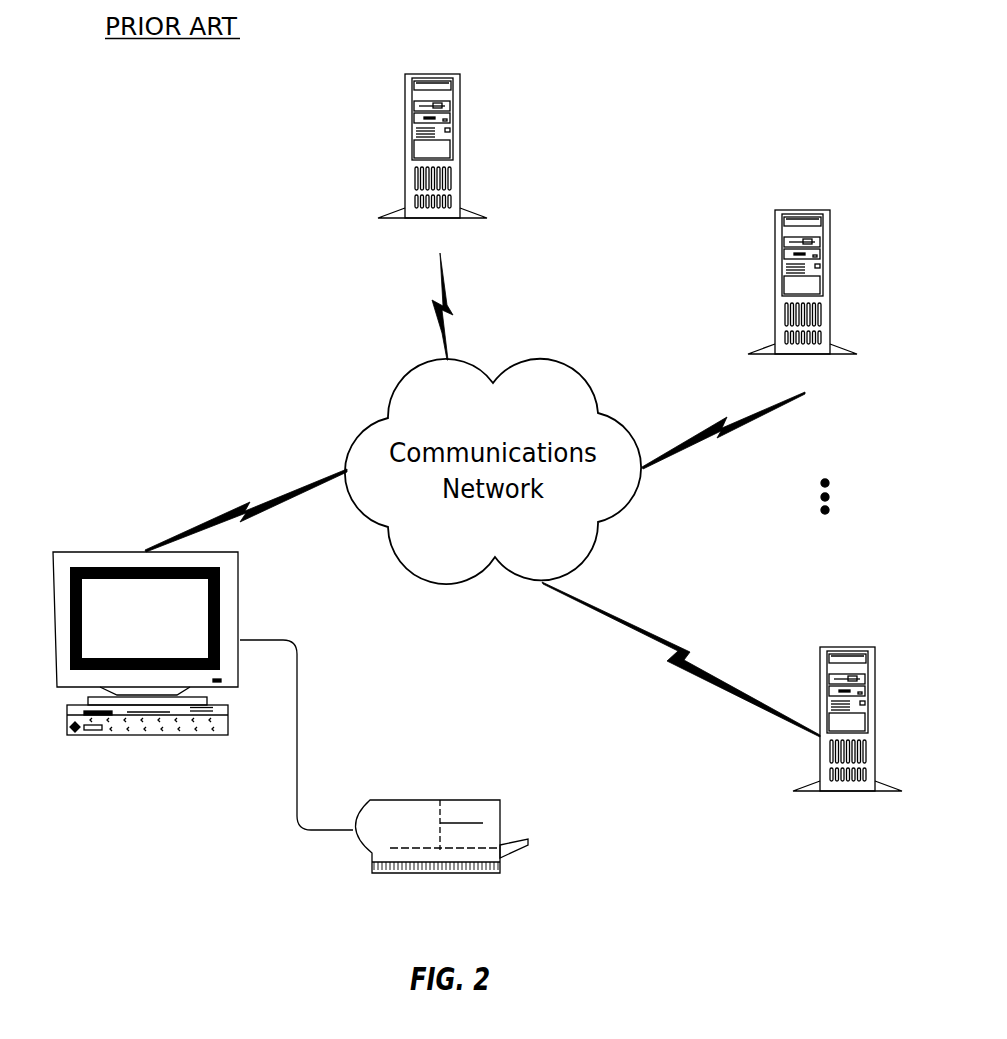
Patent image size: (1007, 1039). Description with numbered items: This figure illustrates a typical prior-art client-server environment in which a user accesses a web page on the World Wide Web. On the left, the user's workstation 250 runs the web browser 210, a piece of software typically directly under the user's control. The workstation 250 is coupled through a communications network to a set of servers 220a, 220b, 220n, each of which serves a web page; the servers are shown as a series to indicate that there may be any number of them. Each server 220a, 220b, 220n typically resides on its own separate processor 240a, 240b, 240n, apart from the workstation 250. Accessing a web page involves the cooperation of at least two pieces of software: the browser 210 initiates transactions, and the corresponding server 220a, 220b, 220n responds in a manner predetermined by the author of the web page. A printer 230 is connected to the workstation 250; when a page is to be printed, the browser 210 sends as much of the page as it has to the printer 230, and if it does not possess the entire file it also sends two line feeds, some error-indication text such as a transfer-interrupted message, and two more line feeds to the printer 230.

The web browser 210 is at (55, 695).
The workstation 250 is at (102, 552).
The server 220a is at (411, 73).
The server 220b is at (781, 210).
The server 220n is at (826, 647).
The processor 240a is at (449, 66).
The processor 240b is at (836, 187).
The processor 240n is at (881, 626).
The printer 230 is at (463, 800).